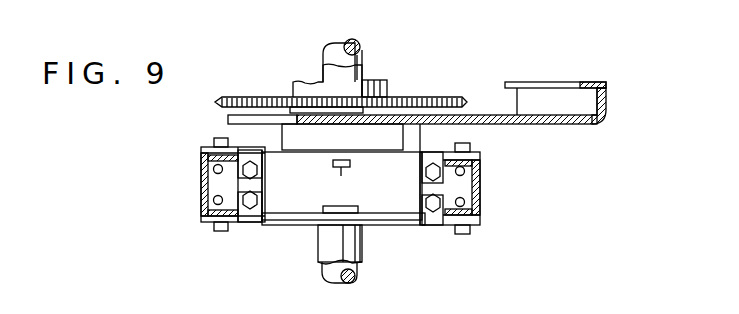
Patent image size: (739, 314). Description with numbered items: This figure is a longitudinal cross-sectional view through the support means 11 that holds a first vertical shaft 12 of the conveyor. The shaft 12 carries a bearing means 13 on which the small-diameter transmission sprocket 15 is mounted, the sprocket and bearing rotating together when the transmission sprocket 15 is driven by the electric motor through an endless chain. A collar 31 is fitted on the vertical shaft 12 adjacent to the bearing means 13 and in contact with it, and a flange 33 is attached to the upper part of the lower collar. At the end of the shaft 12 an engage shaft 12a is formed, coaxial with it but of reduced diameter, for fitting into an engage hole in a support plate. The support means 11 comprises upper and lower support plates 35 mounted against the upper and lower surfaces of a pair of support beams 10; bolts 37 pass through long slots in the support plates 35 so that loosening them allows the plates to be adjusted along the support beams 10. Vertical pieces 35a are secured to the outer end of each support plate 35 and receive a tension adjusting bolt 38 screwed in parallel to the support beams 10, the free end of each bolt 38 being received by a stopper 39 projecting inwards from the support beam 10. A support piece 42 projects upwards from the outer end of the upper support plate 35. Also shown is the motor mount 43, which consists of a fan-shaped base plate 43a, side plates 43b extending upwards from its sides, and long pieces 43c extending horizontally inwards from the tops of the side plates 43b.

The support beam 10 is at (200, 186).
The support means 11 is at (374, 227).
The first vertical shaft 12 is at (359, 45).
The engage shaft 12a is at (340, 186).
The bearing means 13 is at (296, 90).
The transmission sprocket 15 is at (422, 97).
The collar 31 is at (322, 70).
The flange 33 is at (290, 112).
The support plate 35 is at (201, 149).
The vertical piece 35a is at (265, 160).
The bolt 37 is at (214, 141).
The tension adjusting bolt 38 is at (245, 224).
The stopper 39 is at (266, 198).
The support piece 42 is at (292, 134).
The motor mount 43 is at (479, 99).
The base plate 43a is at (545, 124).
The side plate 43b is at (607, 98).
The long piece 43c is at (550, 82).